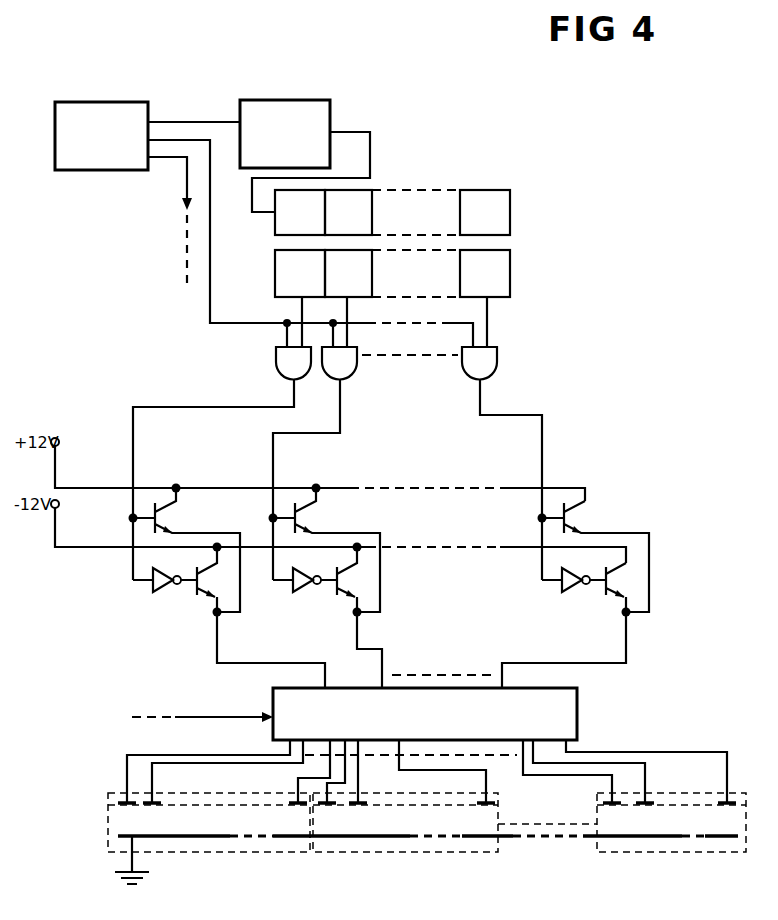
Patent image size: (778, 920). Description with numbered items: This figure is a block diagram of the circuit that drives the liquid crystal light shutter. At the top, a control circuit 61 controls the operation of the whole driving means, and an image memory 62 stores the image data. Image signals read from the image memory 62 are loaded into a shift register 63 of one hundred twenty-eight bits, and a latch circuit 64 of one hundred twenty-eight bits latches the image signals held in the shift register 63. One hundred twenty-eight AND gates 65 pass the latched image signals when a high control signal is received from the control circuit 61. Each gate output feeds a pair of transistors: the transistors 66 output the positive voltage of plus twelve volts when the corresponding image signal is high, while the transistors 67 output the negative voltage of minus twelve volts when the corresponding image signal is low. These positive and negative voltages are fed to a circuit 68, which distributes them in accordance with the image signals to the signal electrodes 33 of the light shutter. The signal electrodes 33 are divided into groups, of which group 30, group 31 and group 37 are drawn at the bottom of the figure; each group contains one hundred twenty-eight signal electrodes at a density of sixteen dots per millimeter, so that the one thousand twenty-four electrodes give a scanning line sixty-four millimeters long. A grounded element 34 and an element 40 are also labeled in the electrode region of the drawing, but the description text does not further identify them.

The control circuit 61 is at (72, 100).
The image memory 62 is at (257, 78).
The shift register 63 is at (478, 197).
The latch circuit 64 is at (498, 264).
The AND gates 65 is at (498, 360).
The transistors 66 is at (575, 517).
The transistors 67 is at (606, 593).
The distributing circuit 68 is at (568, 710).
The signal electrode group 30 is at (290, 850).
The signal electrode group 31 is at (477, 850).
The signal electrodes 33 is at (603, 800).
The common electrode 34 is at (168, 840).
The signal electrode group 37 is at (720, 850).
The electrode gap 40 is at (220, 822).